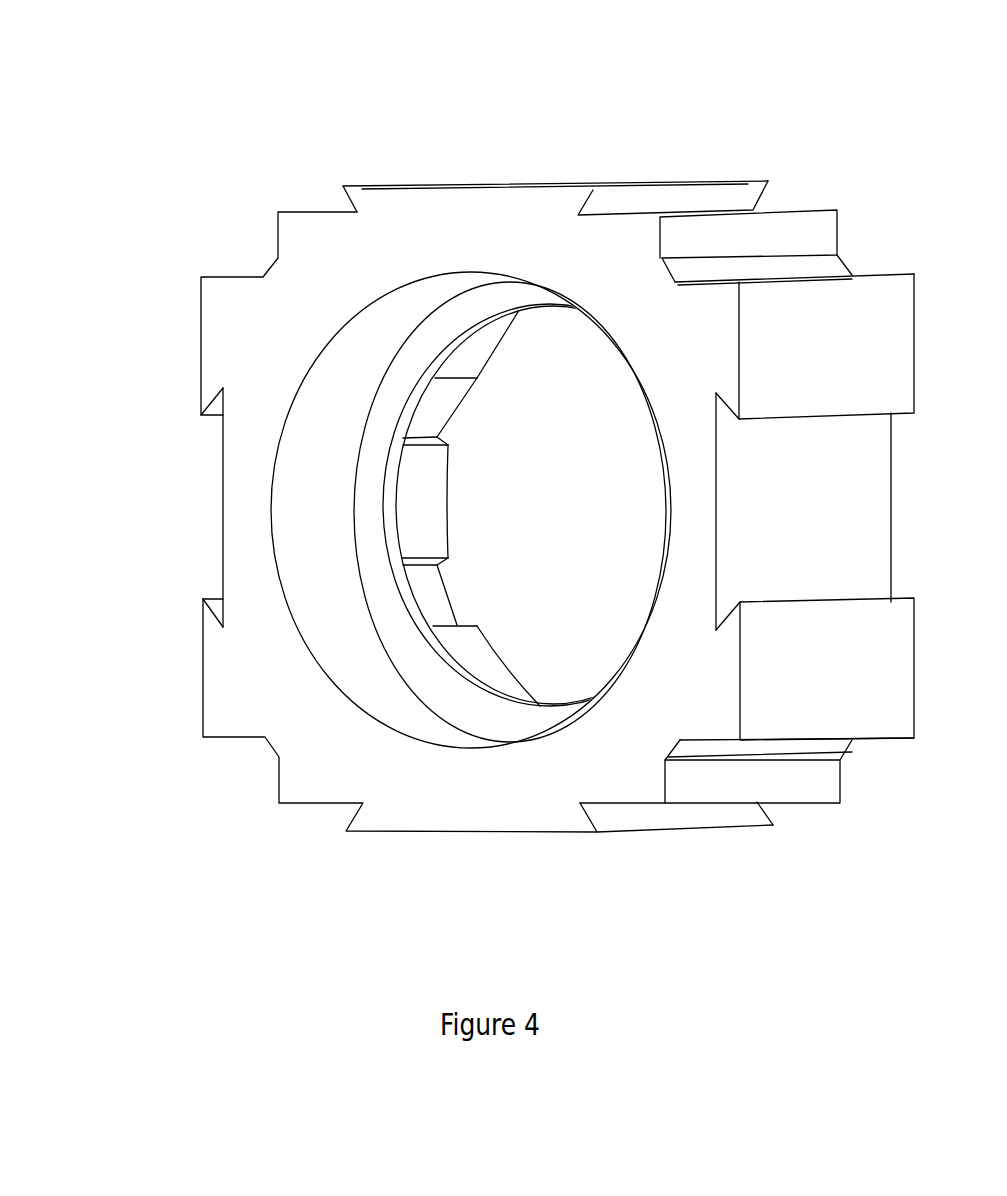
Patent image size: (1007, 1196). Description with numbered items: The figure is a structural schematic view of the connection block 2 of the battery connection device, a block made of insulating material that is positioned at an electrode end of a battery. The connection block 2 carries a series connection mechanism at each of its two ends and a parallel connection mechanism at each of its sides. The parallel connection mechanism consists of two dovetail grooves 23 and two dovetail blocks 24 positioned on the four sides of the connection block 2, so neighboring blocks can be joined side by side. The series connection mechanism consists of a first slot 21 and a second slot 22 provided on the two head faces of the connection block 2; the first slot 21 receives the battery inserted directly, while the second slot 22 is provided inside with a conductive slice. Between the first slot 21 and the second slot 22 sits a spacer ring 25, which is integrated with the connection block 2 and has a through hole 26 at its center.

The connection block 2 is at (345, 285).
The first slot 21 is at (335, 630).
The second slot 22 is at (438, 418).
The dovetail groove 23 is at (215, 463).
The dovetail block 24 is at (468, 198).
The spacer ring 25 is at (385, 578).
The through hole 26 is at (413, 610).